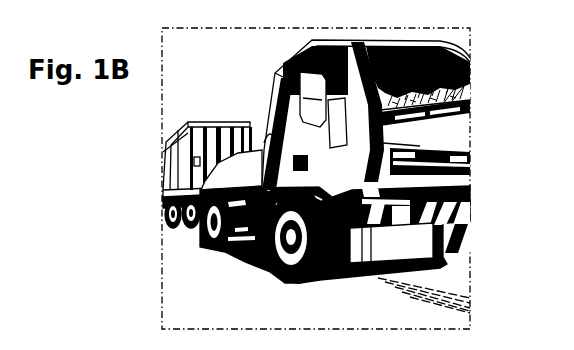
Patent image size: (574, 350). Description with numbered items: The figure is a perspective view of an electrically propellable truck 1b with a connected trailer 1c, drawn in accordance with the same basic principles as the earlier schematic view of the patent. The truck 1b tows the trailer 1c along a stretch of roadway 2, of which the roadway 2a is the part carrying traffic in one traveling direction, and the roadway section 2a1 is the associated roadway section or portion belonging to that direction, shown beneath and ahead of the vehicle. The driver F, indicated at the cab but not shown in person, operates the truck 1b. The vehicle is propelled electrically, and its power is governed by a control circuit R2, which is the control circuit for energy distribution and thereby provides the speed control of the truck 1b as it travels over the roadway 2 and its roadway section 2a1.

The truck 1b is at (300, 48).
The trailer 1c is at (215, 120).
The driver F is at (466, 90).
The stretch of a roadway 2 is at (335, 233).
The control circuit for energy distribution R2 is at (264, 272).
The roadway in one traveling direction 2a is at (411, 236).
The roadway section in one traveling direction 2a1 is at (422, 297).